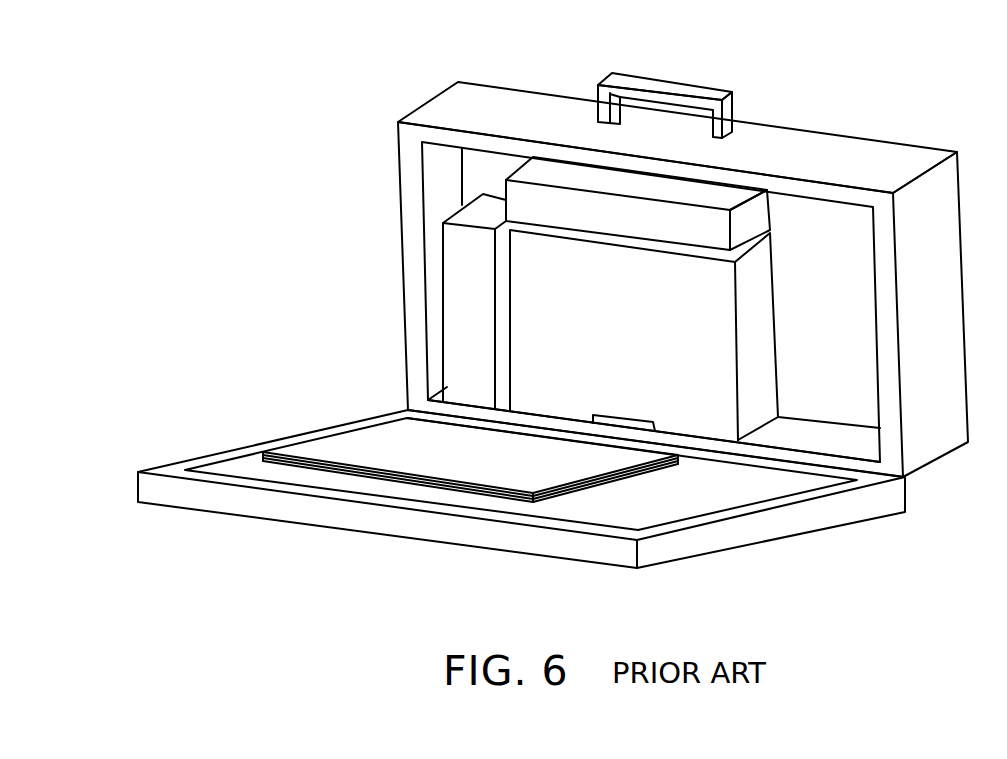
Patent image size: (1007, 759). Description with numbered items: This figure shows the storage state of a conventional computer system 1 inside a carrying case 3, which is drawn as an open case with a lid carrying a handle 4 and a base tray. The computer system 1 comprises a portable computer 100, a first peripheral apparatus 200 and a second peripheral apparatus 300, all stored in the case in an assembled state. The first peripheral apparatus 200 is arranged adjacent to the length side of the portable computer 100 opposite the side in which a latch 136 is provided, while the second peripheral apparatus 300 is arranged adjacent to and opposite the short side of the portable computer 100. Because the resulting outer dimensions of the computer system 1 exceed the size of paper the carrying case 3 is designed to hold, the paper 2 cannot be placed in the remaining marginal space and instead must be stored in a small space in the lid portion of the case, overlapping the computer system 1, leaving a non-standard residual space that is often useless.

The computer system 1 is at (384, 189).
The paper 2 is at (449, 459).
The carrying case 3 is at (460, 99).
The handle 4 is at (672, 88).
The portable computer 100 is at (593, 307).
The latch 136 is at (597, 413).
The first peripheral apparatus 200 is at (523, 202).
The second peripheral apparatus 300 is at (463, 296).